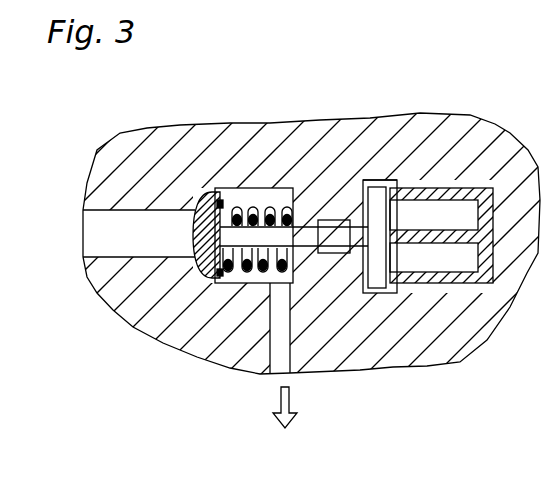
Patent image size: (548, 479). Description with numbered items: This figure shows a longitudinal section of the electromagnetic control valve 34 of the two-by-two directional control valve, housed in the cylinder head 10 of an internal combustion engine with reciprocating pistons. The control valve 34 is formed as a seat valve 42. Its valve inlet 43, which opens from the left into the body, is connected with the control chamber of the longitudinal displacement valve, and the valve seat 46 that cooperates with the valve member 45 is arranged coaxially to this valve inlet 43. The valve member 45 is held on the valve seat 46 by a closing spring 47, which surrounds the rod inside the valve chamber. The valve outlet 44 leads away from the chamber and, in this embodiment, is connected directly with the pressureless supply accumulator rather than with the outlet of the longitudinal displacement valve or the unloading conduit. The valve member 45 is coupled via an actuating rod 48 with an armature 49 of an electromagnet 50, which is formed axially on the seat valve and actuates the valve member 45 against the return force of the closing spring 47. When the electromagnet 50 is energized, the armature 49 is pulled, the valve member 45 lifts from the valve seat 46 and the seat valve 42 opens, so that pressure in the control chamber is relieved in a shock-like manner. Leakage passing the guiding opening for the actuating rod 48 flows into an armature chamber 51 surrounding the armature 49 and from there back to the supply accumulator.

The cylinder head 10 is at (458, 150).
The electromagnetic control valve 34 is at (302, 212).
The seat valve 42 is at (228, 172).
The valve inlet 43 is at (188, 248).
The valve outlet 44 is at (270, 327).
The valve member 45 is at (200, 210).
The valve seat 46 is at (217, 205).
The closing spring 47 is at (256, 210).
The actuating rod 48 is at (332, 255).
The armature 49 is at (379, 278).
The electromagnet 50 is at (434, 278).
The armature chamber 51 is at (382, 186).